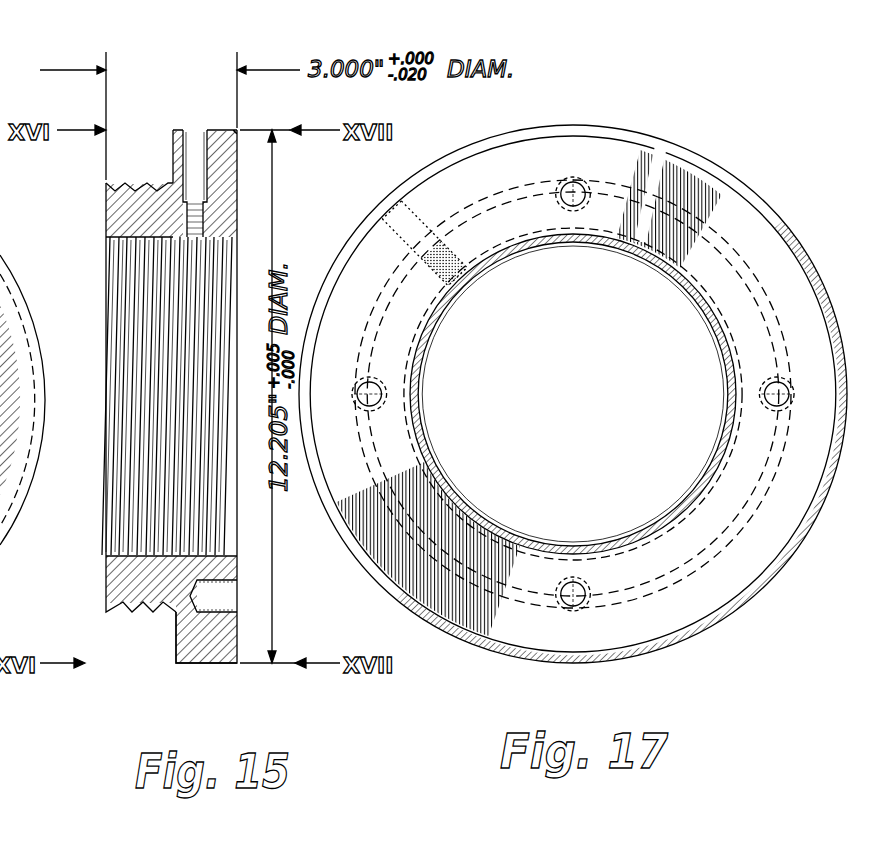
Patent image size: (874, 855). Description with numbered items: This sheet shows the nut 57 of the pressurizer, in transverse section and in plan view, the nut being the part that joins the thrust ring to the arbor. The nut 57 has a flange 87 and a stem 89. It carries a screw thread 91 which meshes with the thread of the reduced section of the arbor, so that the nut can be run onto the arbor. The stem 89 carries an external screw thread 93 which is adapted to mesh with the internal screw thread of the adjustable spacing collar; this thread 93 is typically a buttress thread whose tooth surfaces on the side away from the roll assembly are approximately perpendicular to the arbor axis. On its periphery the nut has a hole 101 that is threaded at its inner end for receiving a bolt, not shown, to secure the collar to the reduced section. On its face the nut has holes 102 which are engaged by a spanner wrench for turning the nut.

In FIG. 15, the nut 57 is at (106, 595).
In FIG. 17, the nut 57 is at (706, 628).
In FIG. 15, the flange 87 is at (216, 650).
In FIG. 17, the flange 87 is at (748, 217).
In FIG. 15, the stem 89 is at (148, 596).
In FIG. 17, the stem 89 is at (682, 537).
In FIG. 15, the screw thread 91 is at (126, 258).
In FIG. 17, the screw thread 91 is at (413, 364).
In FIG. 15, the external screw thread 93 is at (148, 185).
In FIG. 17, the external screw thread 93 is at (730, 537).
In FIG. 15, the hole 101 is at (196, 140).
In FIG. 17, the hole 101 is at (387, 213).
In FIG. 15, the holes 102 is at (212, 598).
In FIG. 17, the holes 102 is at (583, 183).